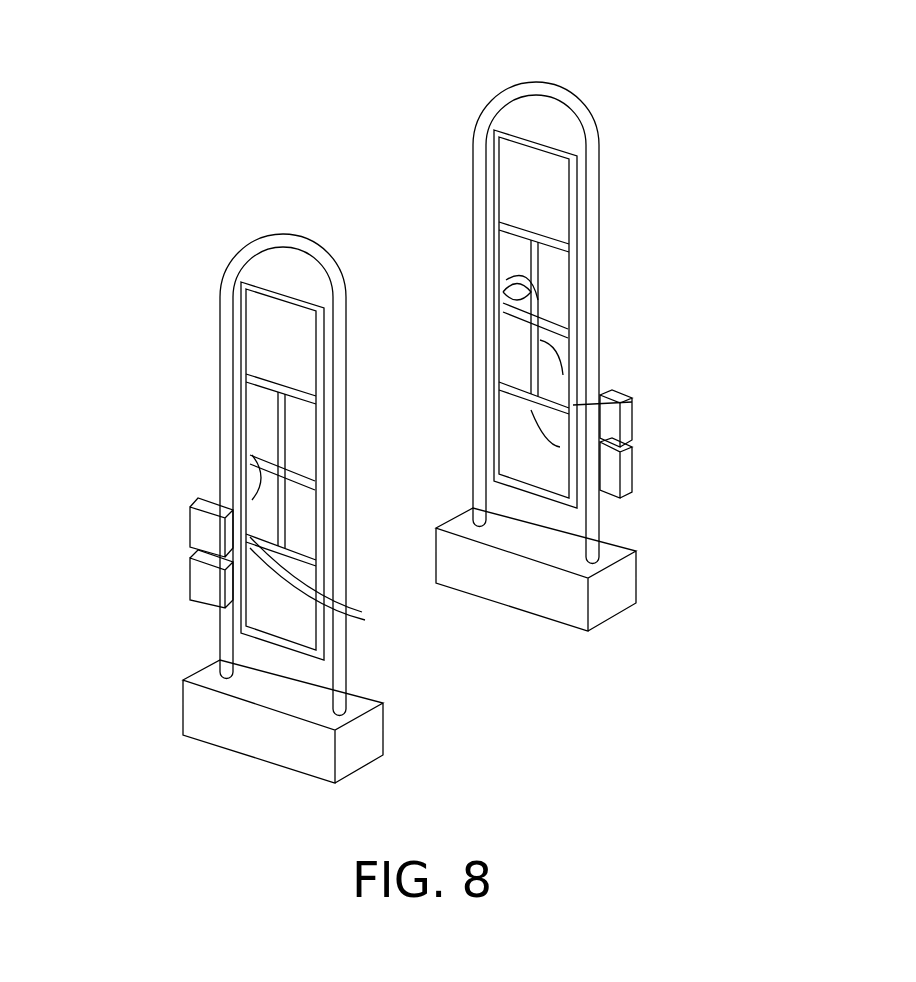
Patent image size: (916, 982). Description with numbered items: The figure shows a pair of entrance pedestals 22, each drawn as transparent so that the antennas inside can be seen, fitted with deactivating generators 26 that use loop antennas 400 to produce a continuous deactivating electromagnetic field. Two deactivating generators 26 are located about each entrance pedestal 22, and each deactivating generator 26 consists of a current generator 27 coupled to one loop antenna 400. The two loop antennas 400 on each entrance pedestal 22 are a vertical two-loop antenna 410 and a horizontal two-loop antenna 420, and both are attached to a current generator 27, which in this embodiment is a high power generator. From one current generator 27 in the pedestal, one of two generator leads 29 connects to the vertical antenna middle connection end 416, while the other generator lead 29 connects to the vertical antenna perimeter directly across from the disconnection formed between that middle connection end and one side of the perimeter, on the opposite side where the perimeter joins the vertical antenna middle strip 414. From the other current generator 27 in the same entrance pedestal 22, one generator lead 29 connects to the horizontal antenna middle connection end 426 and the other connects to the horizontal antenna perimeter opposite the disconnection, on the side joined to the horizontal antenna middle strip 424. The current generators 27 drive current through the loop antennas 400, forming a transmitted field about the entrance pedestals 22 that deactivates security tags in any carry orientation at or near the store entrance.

The entrance pedestal 22 is at (238, 250).
The deactivating generator 26 is at (187, 512).
The current generator 27 is at (200, 582).
The generator lead 29 is at (280, 512).
The loop antenna 400 is at (322, 637).
The vertical two-loop antenna 410 is at (277, 290).
The vertical antenna middle strip 414 is at (298, 472).
The vertical antenna middle connection end 416 is at (507, 303).
The horizontal two-loop antenna 420 is at (263, 377).
The horizontal antenna middle strip 424 is at (282, 425).
The horizontal antenna middle connection end 426 is at (280, 530).